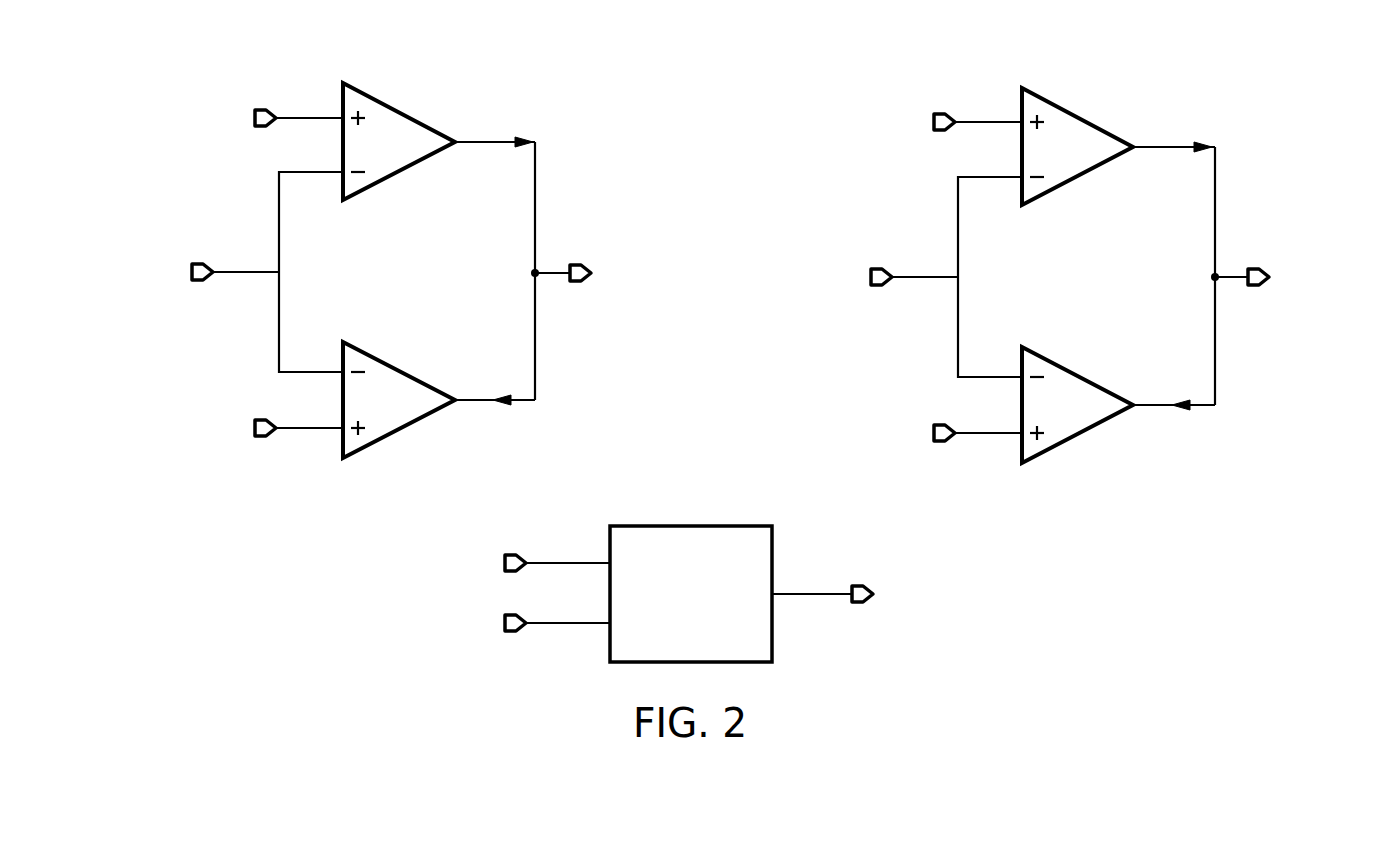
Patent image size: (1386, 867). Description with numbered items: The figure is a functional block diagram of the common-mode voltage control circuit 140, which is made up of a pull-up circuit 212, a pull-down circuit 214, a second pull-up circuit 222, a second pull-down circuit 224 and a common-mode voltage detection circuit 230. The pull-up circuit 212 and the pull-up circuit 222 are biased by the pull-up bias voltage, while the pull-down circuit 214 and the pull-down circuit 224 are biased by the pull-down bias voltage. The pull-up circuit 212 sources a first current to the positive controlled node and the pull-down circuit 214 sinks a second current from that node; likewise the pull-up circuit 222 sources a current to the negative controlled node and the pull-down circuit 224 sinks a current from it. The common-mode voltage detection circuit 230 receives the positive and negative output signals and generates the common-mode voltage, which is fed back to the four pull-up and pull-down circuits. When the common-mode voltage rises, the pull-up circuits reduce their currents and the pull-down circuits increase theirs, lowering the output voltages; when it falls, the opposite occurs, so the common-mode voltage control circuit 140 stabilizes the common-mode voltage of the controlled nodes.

The common-mode voltage control circuit 140 is at (670, 31).
The pull-up circuit 212 is at (391, 108).
The pull-down circuit 214 is at (391, 366).
The pull-up circuit 222 is at (1059, 108).
The pull-down circuit 224 is at (1059, 366).
The common-mode voltage detection circuit 230 is at (698, 526).